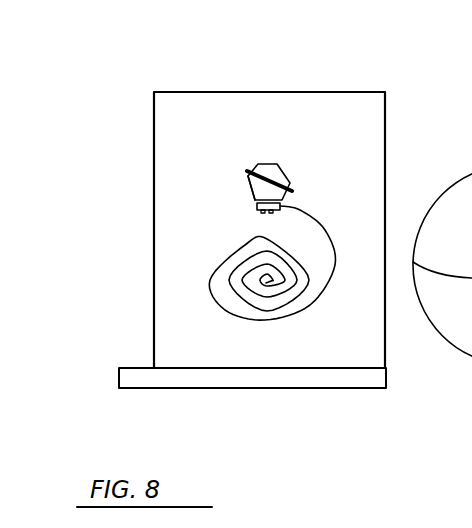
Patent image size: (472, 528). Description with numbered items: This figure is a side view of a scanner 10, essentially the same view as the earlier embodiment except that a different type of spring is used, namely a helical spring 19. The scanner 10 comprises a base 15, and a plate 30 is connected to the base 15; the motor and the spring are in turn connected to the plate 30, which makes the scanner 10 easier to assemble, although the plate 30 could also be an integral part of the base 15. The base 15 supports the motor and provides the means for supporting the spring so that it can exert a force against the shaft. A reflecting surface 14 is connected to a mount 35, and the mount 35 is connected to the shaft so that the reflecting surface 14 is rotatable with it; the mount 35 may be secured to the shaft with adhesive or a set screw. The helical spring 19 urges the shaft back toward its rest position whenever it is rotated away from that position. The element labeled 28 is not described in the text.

The scanner 10 is at (140, 93).
The plate 30 is at (223, 102).
The base 15 is at (118, 378).
The reflecting surface 14 is at (279, 164).
The mount 35 is at (247, 180).
The helical spring 19 is at (213, 264).
The ball 28 is at (471, 397).